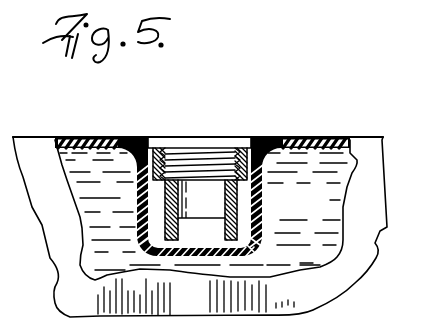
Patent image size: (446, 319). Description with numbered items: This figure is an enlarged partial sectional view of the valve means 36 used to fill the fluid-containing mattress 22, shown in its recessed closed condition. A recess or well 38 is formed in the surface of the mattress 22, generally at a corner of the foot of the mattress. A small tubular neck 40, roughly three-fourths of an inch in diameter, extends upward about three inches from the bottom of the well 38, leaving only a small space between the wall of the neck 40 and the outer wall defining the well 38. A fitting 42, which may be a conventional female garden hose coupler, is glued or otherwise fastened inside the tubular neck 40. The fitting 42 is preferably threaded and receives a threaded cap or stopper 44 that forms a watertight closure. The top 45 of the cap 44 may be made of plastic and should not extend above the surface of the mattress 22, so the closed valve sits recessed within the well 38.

The mattress 22 is at (355, 127).
The valve means 36 is at (210, 142).
The well 38 is at (262, 141).
The tubular neck 40 is at (235, 208).
The fitting 42 is at (157, 139).
The cap 44 is at (189, 163).
The top of the cap 45 is at (214, 138).